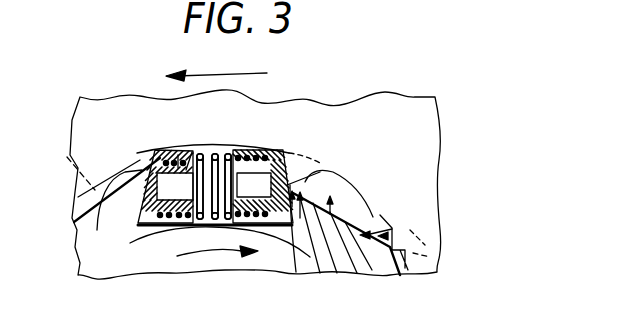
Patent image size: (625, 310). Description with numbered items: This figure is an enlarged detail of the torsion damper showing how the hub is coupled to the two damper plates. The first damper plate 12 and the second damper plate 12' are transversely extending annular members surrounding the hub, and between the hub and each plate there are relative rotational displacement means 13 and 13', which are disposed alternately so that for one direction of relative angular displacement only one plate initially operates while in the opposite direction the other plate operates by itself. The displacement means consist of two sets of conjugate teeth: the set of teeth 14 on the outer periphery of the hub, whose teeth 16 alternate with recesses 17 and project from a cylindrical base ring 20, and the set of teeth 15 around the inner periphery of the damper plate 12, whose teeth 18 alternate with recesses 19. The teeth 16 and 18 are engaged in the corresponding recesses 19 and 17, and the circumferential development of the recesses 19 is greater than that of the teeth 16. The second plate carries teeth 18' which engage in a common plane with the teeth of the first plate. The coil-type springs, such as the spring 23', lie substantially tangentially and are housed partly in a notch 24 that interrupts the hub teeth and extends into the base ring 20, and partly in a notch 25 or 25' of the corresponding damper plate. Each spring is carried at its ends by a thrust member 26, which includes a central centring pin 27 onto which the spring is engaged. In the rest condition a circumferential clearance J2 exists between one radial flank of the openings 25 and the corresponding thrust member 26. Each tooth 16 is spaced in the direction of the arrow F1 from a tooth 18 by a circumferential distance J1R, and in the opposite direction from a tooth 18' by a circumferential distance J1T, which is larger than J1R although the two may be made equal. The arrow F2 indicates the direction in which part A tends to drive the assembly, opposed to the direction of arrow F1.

The damper plate 12 is at (357, 256).
The second damper plate 12' is at (255, 184).
The relative rotational displacement means 13 is at (381, 169).
The relative rotational displacement means 13' is at (284, 243).
The set of teeth 14 is at (392, 229).
The set of teeth 15 is at (312, 249).
The teeth 16 is at (72, 230).
The recesses 17 is at (120, 200).
The teeth 18 is at (270, 225).
The teeth 18' is at (192, 225).
The recesses 19 is at (68, 158).
The cylindrical base ring 20 is at (70, 263).
The spring 23' is at (192, 123).
The notch 24 is at (185, 228).
The notch 25 is at (232, 161).
The notch 25' is at (214, 186).
The thrust member 26 is at (153, 145).
The central centring pin 27 is at (178, 155).
The arrow F1 is at (243, 72).
The arrow F2 is at (213, 255).
The circumferential clearance J2 is at (145, 140).
The circumferential distance J1R is at (310, 192).
The circumferential distance J1T is at (368, 213).